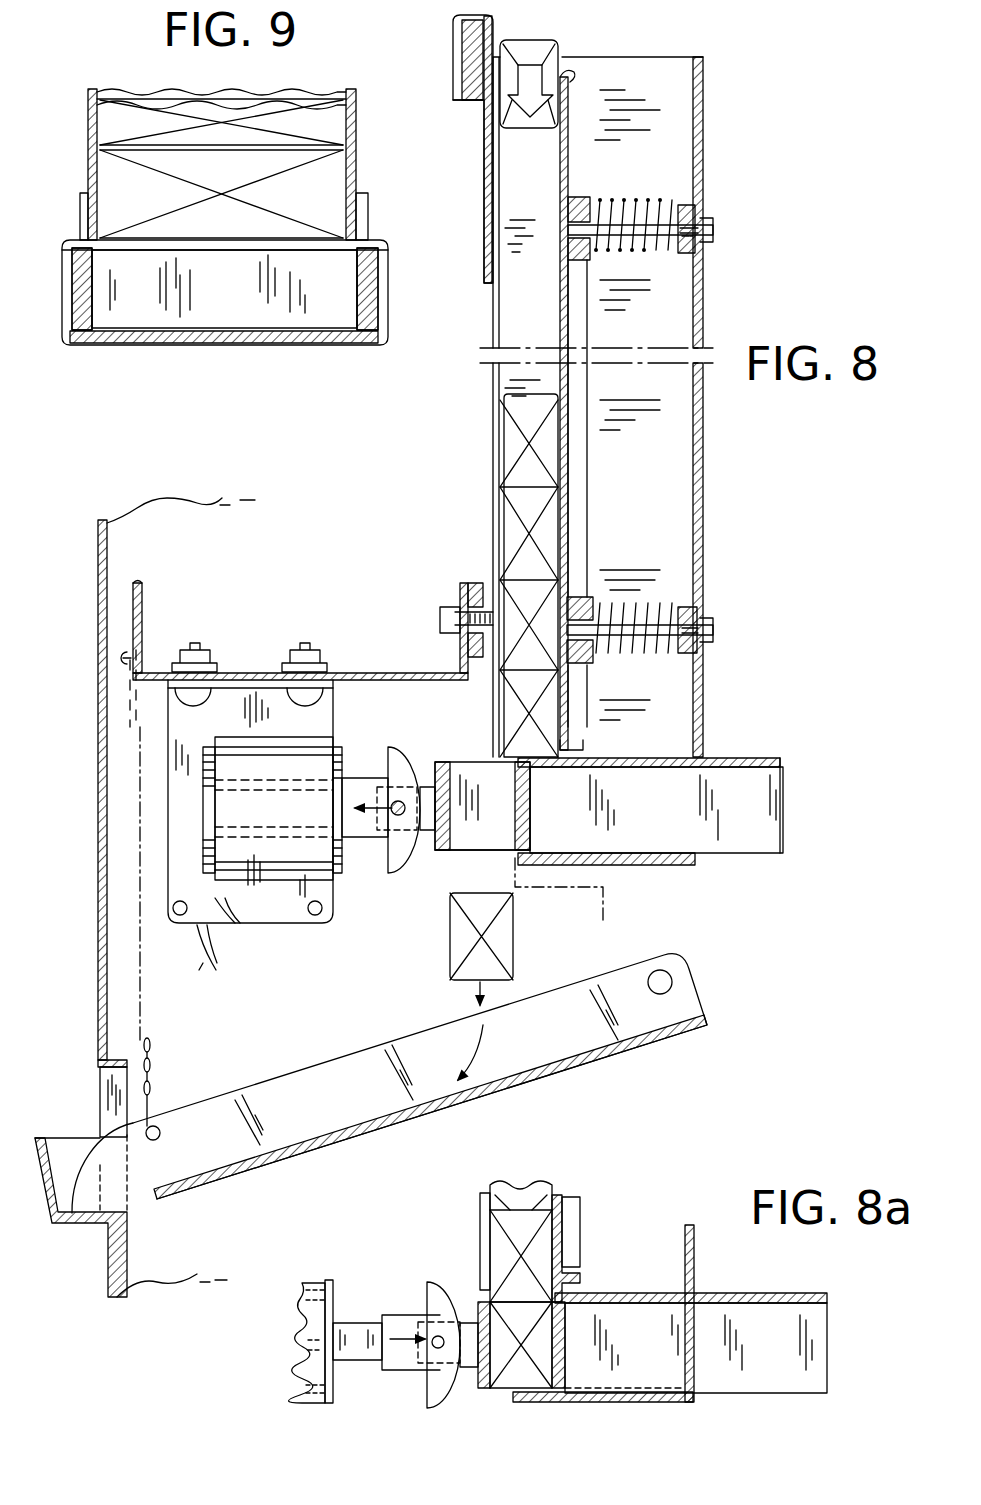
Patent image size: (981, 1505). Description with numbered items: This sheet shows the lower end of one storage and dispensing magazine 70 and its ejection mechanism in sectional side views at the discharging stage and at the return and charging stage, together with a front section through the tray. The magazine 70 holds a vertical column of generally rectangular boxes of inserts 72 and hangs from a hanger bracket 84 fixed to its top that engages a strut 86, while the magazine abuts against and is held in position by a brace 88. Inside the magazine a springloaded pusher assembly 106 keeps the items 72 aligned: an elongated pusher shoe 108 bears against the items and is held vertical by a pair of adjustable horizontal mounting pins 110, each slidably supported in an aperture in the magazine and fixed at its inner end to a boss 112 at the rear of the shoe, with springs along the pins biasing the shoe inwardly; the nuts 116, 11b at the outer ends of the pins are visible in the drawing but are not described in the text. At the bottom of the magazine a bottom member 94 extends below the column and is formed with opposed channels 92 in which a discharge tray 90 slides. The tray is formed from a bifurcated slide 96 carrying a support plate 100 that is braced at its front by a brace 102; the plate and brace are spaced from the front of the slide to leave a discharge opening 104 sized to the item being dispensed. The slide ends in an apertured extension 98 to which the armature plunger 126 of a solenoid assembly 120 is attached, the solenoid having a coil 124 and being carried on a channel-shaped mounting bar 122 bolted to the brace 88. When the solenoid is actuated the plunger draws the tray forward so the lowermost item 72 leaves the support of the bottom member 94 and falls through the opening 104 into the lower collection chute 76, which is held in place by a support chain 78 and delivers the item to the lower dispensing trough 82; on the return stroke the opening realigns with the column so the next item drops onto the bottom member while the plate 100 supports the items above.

In FIG. 9, the storage and dispensing magazine 70 is at (356, 130).
In FIG. 8, the storage and dispensing magazine 70 is at (493, 322).
In FIG. 9, the inserts 72 is at (120, 174).
In FIG. 8, the inserts 72 is at (500, 447).
In FIG. 8a, the inserts 72 is at (500, 1242).
In FIG. 8, the lower collection chute 76 is at (333, 1070).
In FIG. 8, the support chains 78 is at (150, 1072).
In FIG. 8, the lower dispensing trough 82 is at (45, 1140).
In FIG. 8, the hanger bracket 84 is at (453, 35).
In FIG. 8, the struts 86 is at (472, 100).
In FIG. 8, the braces 88 is at (468, 590).
In FIG. 9, the discharge tray 90 is at (152, 300).
In FIG. 8, the discharge tray 90 is at (765, 845).
In FIG. 8a, the discharge tray 90 is at (795, 1368).
In FIG. 9, the channels 92 is at (60, 255).
In FIG. 9, the bottom member 94 is at (287, 343).
In FIG. 8, the bottom member 94 is at (680, 865).
In FIG. 8a, the bottom member 94 is at (635, 1392).
In FIG. 9, the bifurcated slide 96 is at (80, 287).
In FIG. 8, the bifurcated slide 96 is at (445, 850).
In FIG. 8a, the bifurcated slide 96 is at (478, 1380).
In FIG. 8, the apertured extension 98 is at (424, 787).
In FIG. 8a, the apertured extension 98 is at (470, 1323).
In FIG. 8, the support plate 100 is at (745, 758).
In FIG. 8a, the support plate 100 is at (790, 1293).
In FIG. 8, the brace 102 is at (530, 820).
In FIG. 8a, the brace 102 is at (565, 1345).
In FIG. 8, the discharge opening 104 is at (478, 763).
In FIG. 8, the springloaded pusher assembly 106 is at (630, 162).
In FIG. 8, the pusher shoe 108 is at (576, 95).
In FIG. 8a, the pusher shoe 108 is at (562, 1212).
In FIG. 8, the mounting pins 110 is at (612, 215).
In FIG. 8, the boss 112 is at (590, 258).
In FIG. 8, the nut 116 is at (668, 258).
In FIG. 8, the nut 11b is at (655, 660).
In FIG. 8, the solenoid assembly 120 is at (266, 930).
In FIG. 8a, the solenoid assembly 120 is at (297, 1280).
In FIG. 8, the mounting bars 122 is at (372, 673).
In FIG. 8, the coil 124 is at (300, 845).
In FIG. 8a, the coil 124 is at (313, 1283).
In FIG. 8, the armature plunger 126 is at (363, 778).
In FIG. 8a, the armature plunger 126 is at (365, 1323).